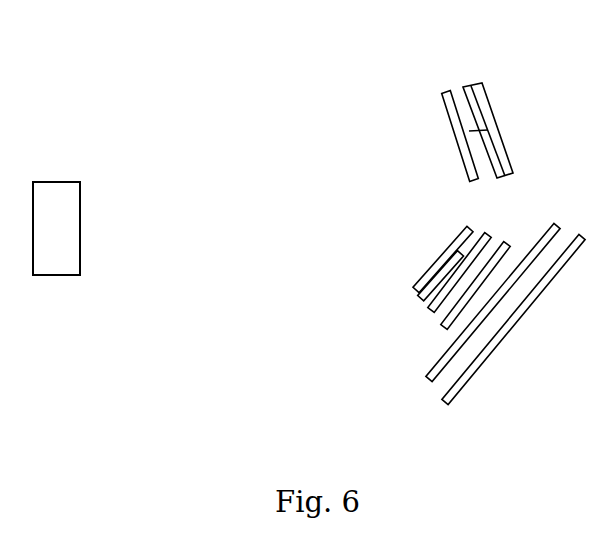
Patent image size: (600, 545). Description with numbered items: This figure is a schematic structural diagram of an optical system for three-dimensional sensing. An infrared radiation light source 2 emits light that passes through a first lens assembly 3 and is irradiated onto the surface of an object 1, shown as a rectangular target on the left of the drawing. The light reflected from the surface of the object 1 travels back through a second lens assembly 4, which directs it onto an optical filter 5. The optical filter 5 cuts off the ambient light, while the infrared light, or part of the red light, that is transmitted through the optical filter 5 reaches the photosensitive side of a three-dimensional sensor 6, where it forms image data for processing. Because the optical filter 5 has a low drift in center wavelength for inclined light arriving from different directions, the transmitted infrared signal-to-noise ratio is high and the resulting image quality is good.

The object 1 is at (70, 202).
The infrared radiation light source 2 is at (512, 126).
The first lens assembly 3 is at (450, 90).
The second lens assembly 4 is at (413, 296).
The optical filter 5 is at (428, 380).
The three-dimensional sensor 6 is at (488, 356).